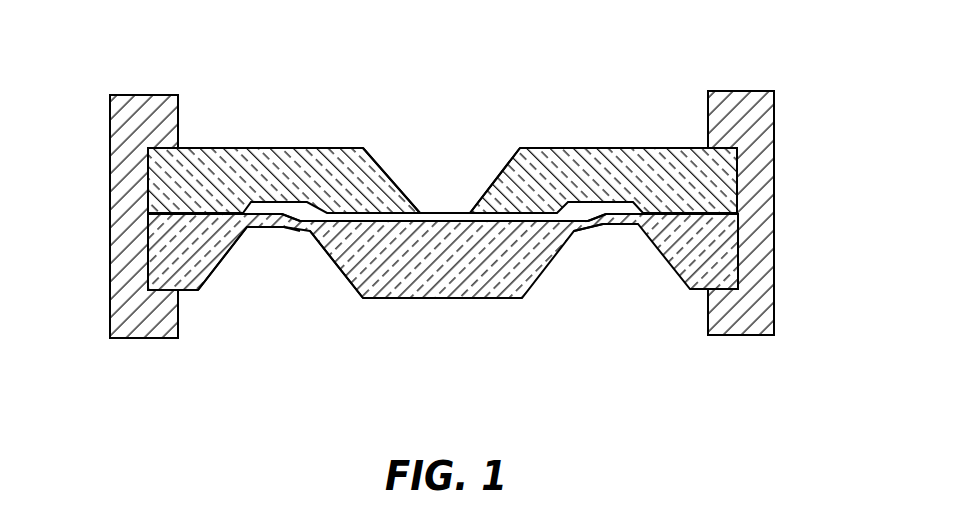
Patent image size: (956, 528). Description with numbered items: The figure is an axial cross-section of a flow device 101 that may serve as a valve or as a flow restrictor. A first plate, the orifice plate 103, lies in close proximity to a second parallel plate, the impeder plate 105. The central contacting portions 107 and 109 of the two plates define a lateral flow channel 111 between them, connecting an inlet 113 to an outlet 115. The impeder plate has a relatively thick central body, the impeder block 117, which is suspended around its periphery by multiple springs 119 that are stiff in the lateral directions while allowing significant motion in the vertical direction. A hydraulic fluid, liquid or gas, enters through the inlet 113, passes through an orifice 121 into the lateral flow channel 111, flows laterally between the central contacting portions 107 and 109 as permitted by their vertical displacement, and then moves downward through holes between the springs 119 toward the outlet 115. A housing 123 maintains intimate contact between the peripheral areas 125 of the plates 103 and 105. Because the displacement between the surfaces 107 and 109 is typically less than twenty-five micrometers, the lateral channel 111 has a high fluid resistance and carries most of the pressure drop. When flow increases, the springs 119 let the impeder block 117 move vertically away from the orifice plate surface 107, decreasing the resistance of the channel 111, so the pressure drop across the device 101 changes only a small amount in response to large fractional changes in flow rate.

The flow device 101 is at (441, 220).
The orifice plate 103 is at (580, 165).
The impeder plate 105 is at (672, 270).
The central contacting portion of orifice plate 107 is at (337, 195).
The central contacting portion of impeder plate 109 is at (493, 222).
The lateral flow channel 111 is at (388, 213).
The inlet 113 is at (448, 163).
The outlet 115 is at (415, 343).
The impeder block 117 is at (347, 262).
The springs 119 is at (292, 233).
The orifice 121 is at (437, 212).
The housing 123 is at (142, 107).
The peripheral areas 125 is at (703, 217).